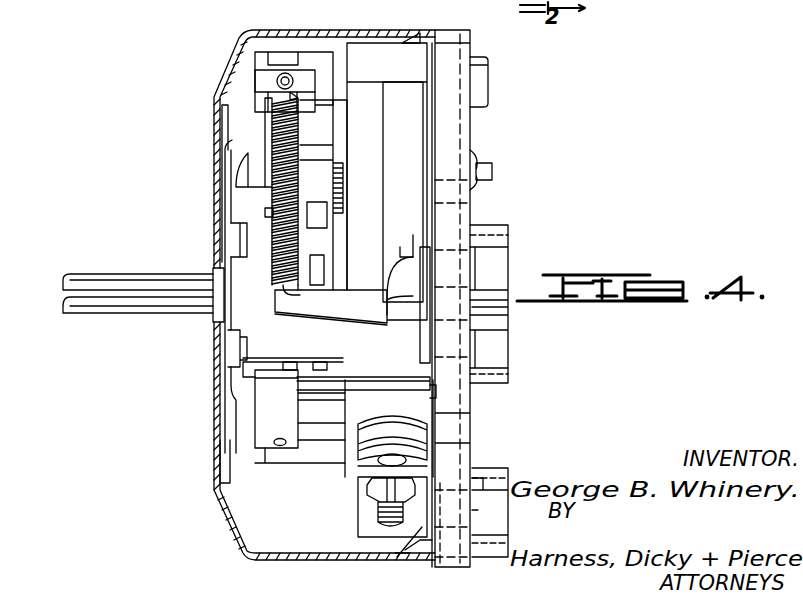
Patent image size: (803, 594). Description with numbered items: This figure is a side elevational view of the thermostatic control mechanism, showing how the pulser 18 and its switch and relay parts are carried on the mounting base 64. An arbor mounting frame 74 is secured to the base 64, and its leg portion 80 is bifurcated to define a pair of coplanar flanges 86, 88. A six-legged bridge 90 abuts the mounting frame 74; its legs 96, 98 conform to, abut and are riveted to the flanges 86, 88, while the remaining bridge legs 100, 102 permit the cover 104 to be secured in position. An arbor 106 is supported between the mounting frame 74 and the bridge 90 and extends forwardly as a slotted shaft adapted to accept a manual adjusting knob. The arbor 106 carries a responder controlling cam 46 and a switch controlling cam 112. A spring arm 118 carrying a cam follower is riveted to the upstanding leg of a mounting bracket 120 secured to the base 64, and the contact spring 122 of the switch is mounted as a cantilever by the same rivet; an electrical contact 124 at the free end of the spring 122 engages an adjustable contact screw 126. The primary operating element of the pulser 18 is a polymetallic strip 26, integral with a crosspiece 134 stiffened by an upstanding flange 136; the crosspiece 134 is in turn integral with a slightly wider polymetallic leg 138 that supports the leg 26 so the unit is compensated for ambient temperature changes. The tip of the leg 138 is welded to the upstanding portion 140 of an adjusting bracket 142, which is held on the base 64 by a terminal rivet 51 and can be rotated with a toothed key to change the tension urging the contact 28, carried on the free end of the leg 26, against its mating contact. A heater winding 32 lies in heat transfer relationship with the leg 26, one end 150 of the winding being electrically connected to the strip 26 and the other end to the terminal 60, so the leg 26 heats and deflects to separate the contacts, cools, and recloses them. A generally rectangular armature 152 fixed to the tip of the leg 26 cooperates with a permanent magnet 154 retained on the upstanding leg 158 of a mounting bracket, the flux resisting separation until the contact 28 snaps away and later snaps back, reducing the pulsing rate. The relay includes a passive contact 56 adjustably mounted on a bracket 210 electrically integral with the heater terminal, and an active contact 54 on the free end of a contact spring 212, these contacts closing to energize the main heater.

The pulser 18 is at (260, 170).
The polymetallic strip 26 is at (270, 303).
The contact 28 is at (272, 88).
The heater winding 32 is at (268, 182).
The responder controlling cam 46 is at (317, 202).
The terminal rivet 51 is at (405, 239).
The active contact 54 is at (385, 428).
The passive contact 56 is at (480, 445).
The terminal 60 is at (414, 318).
The mounting base 64 is at (447, 224).
The arbor mounting frame 74 is at (345, 342).
The leg portion 80 is at (333, 366).
The flange 86 is at (240, 242).
The flange 88 is at (236, 346).
The six-legged bridge 90 is at (232, 326).
The bridge leg 96 is at (232, 250).
The bridge leg 98 is at (232, 360).
The bridge leg 100 is at (228, 112).
The bridge leg 102 is at (226, 470).
The cover 104 is at (240, 44).
The arbor 106 is at (86, 276).
The switch controlling cam 112 is at (397, 557).
The spring arm 118 is at (262, 358).
The mounting bracket 120 is at (405, 378).
The contact spring 122 is at (277, 382).
The electrical contact 124 is at (289, 461).
The contact screw 126 is at (280, 58).
The crosspiece 134 is at (318, 285).
The upstanding flange 136 is at (343, 358).
The polymetallic leg portion 138 is at (365, 143).
The upstanding portion 140 is at (398, 85).
The adjusting bracket 142 is at (430, 93).
The end of heater winding 150 is at (332, 92).
The armature 152 is at (262, 80).
The permanent magnet 154 is at (312, 60).
The upstanding leg 158 is at (340, 22).
The bracket 210 is at (433, 473).
The contact spring 212 is at (355, 520).